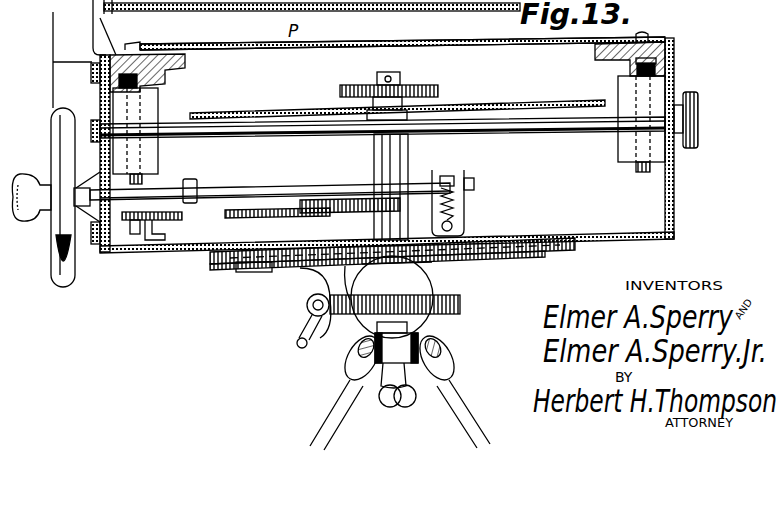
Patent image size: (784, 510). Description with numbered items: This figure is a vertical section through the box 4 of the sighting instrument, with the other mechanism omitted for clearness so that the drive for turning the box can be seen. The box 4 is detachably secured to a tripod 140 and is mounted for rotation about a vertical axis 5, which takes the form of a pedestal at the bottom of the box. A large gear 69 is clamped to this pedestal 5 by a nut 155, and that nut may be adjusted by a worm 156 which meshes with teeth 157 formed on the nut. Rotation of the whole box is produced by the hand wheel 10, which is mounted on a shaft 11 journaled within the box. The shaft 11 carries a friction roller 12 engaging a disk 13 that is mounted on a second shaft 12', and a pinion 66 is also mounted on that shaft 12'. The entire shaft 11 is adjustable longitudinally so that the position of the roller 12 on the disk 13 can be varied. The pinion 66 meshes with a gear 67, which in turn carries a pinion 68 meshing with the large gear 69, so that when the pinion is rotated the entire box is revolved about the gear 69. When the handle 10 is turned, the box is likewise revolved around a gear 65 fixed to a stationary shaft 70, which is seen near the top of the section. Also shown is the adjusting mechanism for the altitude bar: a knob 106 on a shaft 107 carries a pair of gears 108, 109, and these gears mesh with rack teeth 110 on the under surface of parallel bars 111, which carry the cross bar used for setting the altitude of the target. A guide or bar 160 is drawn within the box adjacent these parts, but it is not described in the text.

The box 4 is at (673, 190).
The vertical axis / pedestal 5 is at (418, 330).
The hand wheel 10 is at (77, 272).
The shaft 11 is at (455, 190).
The friction roller 12 is at (270, 184).
The shaft 12' is at (275, 182).
The disk 13 is at (150, 224).
The gear 65 is at (440, 88).
The pinion 66 is at (272, 217).
The gear 67 is at (330, 214).
The pinion 68 is at (250, 270).
The large gear 69 is at (466, 262).
The stationary shaft 70 is at (380, 74).
The knob 106 is at (698, 128).
The shaft 107 is at (517, 131).
The gear 108 is at (152, 150).
The gear 109 is at (641, 170).
The rack teeth 110 is at (661, 66).
The parallel bars 111 is at (661, 41).
The tripod 140 is at (460, 396).
The nut 155 is at (450, 290).
The worm 156 is at (308, 312).
The teeth 157 is at (440, 312).
The guide bar 160 is at (535, 103).